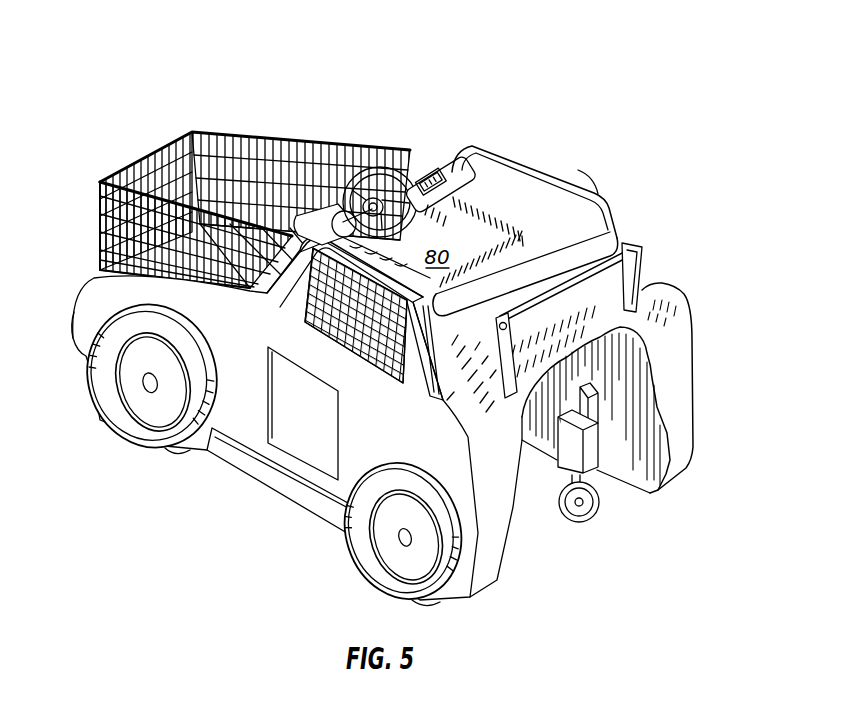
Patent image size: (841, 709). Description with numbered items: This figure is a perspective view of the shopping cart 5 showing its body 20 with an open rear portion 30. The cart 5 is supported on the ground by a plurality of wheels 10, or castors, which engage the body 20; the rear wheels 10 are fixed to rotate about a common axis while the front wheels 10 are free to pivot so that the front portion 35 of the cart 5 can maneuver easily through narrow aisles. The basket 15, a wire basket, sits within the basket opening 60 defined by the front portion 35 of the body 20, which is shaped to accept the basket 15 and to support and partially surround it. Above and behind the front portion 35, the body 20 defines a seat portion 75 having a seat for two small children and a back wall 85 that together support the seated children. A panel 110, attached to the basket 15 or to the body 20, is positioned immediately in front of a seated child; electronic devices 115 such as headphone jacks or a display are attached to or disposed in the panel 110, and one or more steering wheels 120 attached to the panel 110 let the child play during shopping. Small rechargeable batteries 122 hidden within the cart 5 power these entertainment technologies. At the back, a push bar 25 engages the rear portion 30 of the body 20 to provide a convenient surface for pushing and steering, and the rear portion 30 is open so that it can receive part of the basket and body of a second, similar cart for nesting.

The shopping cart 5 is at (641, 138).
The wheels 10 is at (173, 456).
The basket 15 is at (236, 145).
The body 20 is at (88, 290).
The push bar 25 is at (614, 252).
The rear portion 30 is at (684, 328).
The front portion 35 is at (73, 313).
The basket opening 60 is at (207, 150).
The seat portion 75 is at (514, 176).
The back wall 85 is at (573, 207).
The panel 110 is at (448, 147).
The electronic devices 115 is at (426, 165).
The steering wheels 120 is at (373, 168).
The rechargeable batteries 122 is at (593, 403).